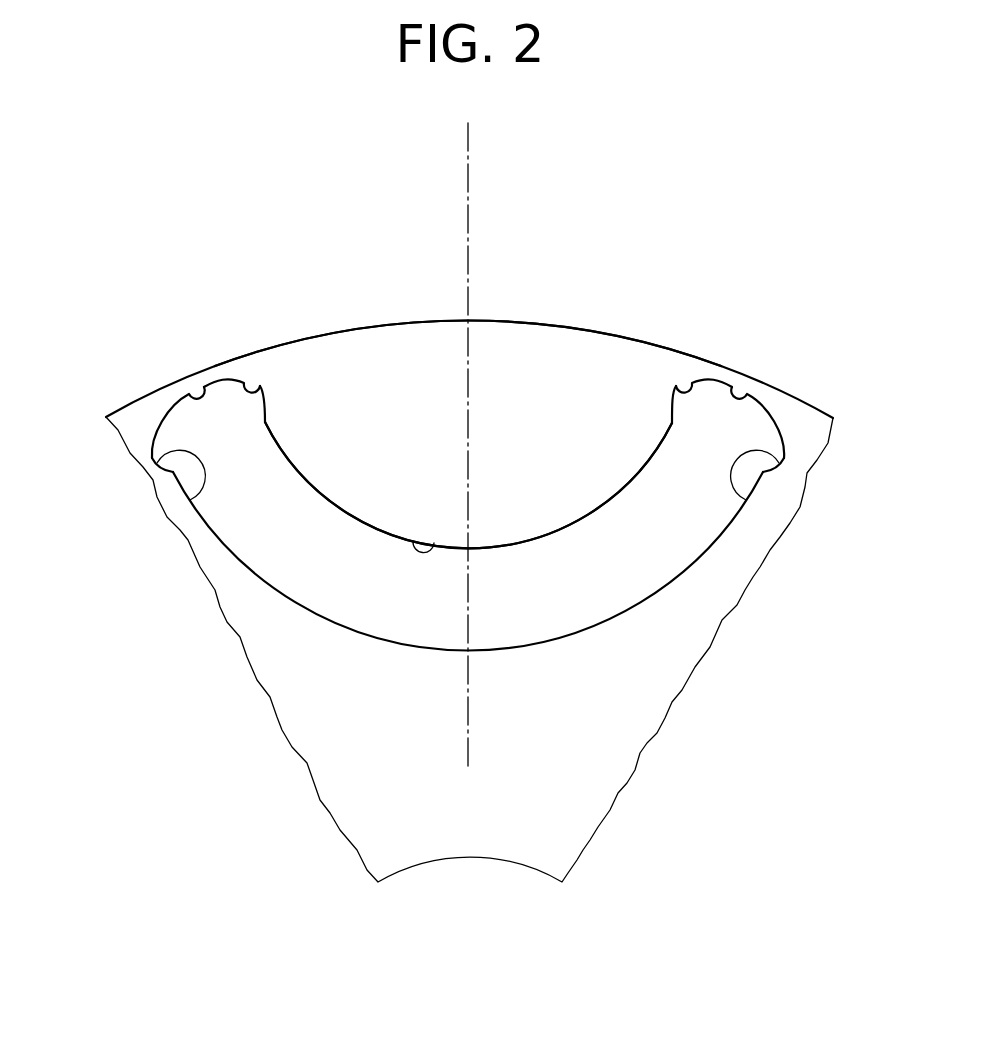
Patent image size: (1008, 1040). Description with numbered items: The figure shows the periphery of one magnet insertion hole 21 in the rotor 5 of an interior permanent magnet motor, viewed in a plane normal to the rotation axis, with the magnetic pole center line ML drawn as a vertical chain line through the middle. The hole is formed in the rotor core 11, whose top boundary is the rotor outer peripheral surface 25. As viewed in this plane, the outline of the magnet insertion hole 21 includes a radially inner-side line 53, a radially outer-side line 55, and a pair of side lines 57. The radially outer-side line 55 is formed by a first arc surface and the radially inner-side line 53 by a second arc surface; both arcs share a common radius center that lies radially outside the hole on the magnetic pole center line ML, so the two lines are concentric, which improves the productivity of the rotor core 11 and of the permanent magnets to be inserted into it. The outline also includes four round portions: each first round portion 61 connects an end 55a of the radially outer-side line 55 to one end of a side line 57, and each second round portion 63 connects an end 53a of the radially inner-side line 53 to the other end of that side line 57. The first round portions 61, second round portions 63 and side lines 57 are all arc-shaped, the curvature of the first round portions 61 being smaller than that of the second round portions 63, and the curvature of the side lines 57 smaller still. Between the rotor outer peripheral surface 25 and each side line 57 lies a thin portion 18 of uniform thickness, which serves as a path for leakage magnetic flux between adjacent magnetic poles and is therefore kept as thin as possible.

The rotor 5 is at (70, 359).
The magnetic pole center line ML is at (470, 150).
The rotor core 11 is at (379, 348).
The thin portion 18 is at (215, 375).
The magnet insertion hole 21 is at (314, 477).
The rotor outer peripheral surface 25 is at (513, 323).
The radially inner-side line 53 is at (593, 627).
The end of the radially inner-side line 53a is at (156, 478).
The radially outer-side line 55 is at (436, 541).
The end of the radially outer-side line 55a is at (267, 423).
The side line 57 is at (197, 384).
The first round portion 61 is at (256, 383).
The second round portion 63 is at (190, 500).